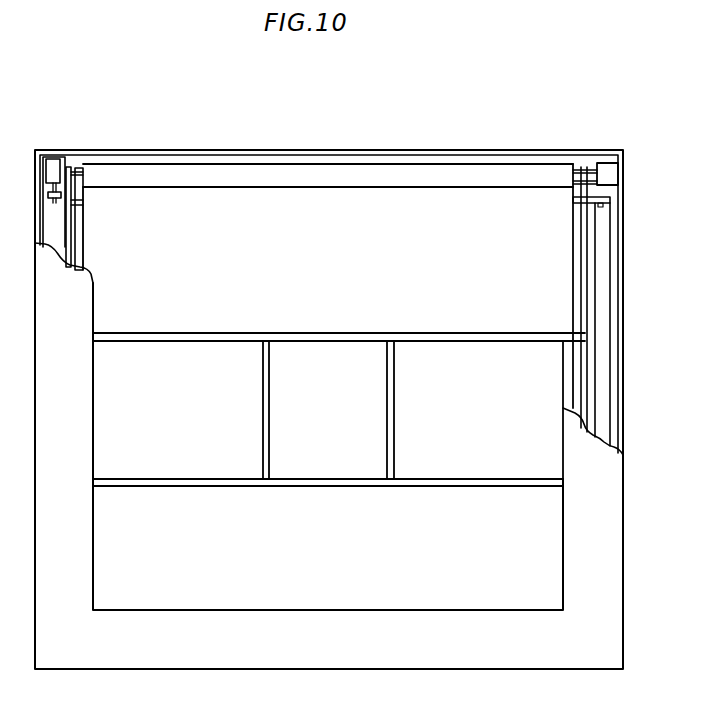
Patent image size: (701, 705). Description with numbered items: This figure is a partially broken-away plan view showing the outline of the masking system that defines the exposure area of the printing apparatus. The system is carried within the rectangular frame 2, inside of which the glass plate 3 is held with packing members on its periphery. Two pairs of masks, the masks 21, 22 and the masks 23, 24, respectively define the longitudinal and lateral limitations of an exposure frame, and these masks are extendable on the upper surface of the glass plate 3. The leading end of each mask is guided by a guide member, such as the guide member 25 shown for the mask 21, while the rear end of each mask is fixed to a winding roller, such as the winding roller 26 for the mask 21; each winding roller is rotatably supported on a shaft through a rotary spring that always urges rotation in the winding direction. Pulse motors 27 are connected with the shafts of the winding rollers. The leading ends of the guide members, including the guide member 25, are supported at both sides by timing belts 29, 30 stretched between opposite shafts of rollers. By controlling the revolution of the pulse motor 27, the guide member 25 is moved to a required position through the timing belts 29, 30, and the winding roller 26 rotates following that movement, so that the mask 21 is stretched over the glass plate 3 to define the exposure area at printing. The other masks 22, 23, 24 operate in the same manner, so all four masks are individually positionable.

The rectangular frame 2 is at (612, 568).
The glass plate 3 is at (335, 427).
The mask 21 is at (336, 296).
The mask 22 is at (333, 565).
The mask 23 is at (486, 427).
The mask 24 is at (187, 425).
The guide member 25 is at (168, 333).
The winding roller 26 is at (490, 173).
The pulse motor 27 is at (53, 160).
The timing belt 29 is at (583, 278).
The timing belt 30 is at (68, 240).